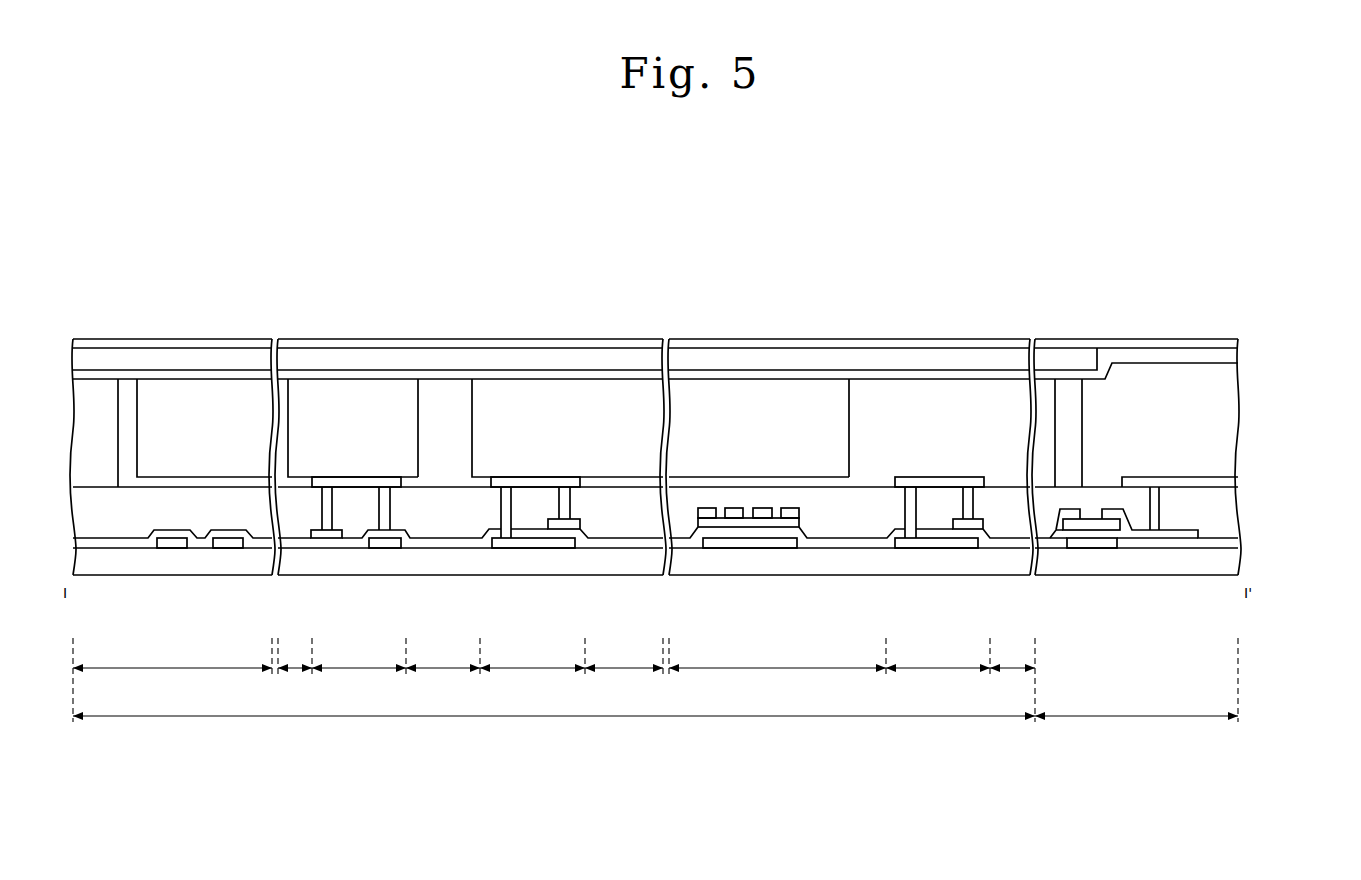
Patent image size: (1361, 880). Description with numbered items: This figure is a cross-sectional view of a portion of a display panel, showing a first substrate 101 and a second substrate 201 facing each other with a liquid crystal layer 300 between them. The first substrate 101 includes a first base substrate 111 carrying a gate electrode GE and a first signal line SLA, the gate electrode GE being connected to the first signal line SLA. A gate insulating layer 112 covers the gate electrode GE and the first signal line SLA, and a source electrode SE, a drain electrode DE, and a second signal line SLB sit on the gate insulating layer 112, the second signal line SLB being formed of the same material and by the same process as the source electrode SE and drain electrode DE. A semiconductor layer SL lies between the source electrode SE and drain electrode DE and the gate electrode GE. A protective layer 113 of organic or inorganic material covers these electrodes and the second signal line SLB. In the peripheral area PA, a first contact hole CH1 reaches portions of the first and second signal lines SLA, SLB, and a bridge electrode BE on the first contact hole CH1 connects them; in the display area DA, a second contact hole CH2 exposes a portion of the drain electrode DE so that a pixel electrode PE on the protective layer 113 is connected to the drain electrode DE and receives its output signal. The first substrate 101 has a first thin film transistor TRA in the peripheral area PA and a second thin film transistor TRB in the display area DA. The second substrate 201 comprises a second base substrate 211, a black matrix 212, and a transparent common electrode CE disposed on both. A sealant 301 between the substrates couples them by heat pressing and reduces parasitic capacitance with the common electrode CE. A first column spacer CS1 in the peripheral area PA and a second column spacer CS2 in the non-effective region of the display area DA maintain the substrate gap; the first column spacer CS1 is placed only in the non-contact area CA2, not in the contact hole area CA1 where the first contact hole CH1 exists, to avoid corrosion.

The liquid crystal layer 300 is at (1236, 420).
The sealant 301 is at (92, 385).
The second substrate 201 is at (994, 278).
The second base substrate 211 is at (977, 343).
The black matrix 212 is at (919, 356).
The common electrode CE is at (863, 375).
The first column spacer CS1 is at (200, 385).
The second column spacer CS2 is at (1068, 388).
The first substrate 101 is at (1312, 505).
The first base substrate 111 is at (1236, 565).
The gate insulating layer 112 is at (1236, 542).
The protective layer 113 is at (1236, 511).
The pixel electrode PE is at (1236, 482).
The first contact hole CH1 is at (513, 505).
The second contact hole CH2 is at (1163, 507).
The bridge electrode BE is at (350, 483).
The first signal line SLA is at (174, 545).
The second signal line SLB is at (331, 535).
The first thin film transistor TRA is at (670, 630).
The second thin film transistor TRB is at (1165, 630).
The source electrode SE is at (707, 515).
The drain electrode DE is at (735, 515).
The gate electrode GE is at (747, 548).
The semiconductor layer SL is at (793, 528).
The contact hole area CA1 is at (651, 667).
The non-contact area CA2 is at (554, 680).
The peripheral area PA is at (554, 728).
The display area DA is at (1136, 689).